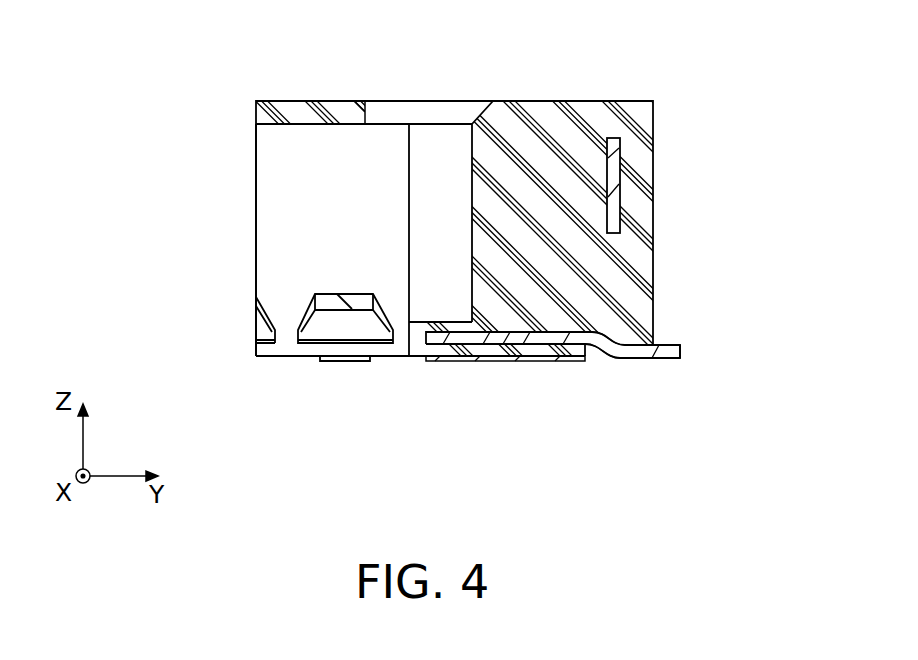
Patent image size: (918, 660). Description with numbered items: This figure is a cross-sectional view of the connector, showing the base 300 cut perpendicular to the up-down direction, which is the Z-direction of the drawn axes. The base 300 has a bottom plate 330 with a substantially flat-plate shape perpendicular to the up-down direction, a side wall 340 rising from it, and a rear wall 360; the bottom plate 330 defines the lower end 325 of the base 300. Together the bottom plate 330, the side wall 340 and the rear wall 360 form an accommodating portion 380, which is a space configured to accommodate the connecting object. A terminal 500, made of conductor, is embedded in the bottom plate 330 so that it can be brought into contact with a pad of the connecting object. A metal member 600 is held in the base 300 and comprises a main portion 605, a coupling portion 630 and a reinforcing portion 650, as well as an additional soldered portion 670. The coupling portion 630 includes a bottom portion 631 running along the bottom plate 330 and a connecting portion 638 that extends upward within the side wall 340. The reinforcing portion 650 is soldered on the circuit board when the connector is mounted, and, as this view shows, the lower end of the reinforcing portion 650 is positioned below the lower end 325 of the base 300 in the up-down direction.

The base 300 is at (538, 113).
The lower end 325 is at (543, 353).
The bottom plate 330 is at (412, 340).
The side wall 340 is at (640, 264).
The rear wall 360 is at (277, 163).
The accommodating portion 380 is at (288, 212).
The terminal 500 is at (328, 299).
The metal member 600 is at (590, 348).
The main portion 605 is at (450, 345).
The coupling portion 630 is at (592, 378).
The bottom portion 631 is at (538, 338).
The connecting portion 638 is at (613, 185).
The reinforcing portion 650 is at (682, 352).
The additional soldered portion 670 is at (487, 358).